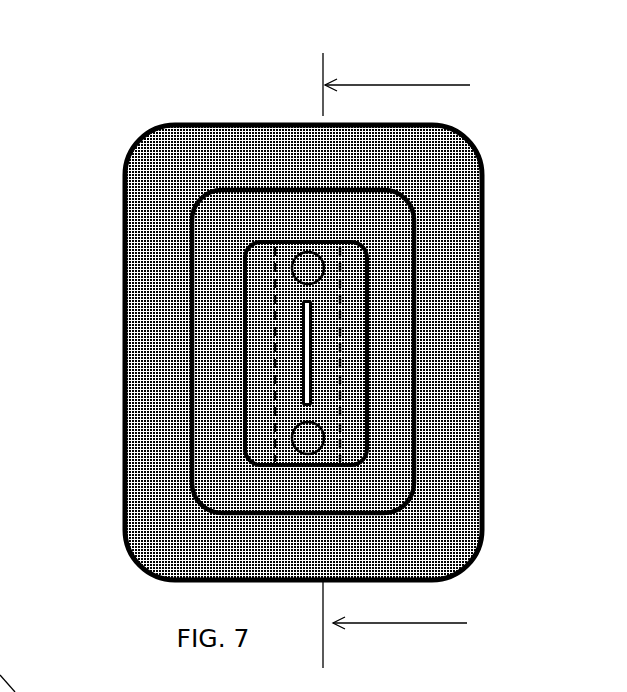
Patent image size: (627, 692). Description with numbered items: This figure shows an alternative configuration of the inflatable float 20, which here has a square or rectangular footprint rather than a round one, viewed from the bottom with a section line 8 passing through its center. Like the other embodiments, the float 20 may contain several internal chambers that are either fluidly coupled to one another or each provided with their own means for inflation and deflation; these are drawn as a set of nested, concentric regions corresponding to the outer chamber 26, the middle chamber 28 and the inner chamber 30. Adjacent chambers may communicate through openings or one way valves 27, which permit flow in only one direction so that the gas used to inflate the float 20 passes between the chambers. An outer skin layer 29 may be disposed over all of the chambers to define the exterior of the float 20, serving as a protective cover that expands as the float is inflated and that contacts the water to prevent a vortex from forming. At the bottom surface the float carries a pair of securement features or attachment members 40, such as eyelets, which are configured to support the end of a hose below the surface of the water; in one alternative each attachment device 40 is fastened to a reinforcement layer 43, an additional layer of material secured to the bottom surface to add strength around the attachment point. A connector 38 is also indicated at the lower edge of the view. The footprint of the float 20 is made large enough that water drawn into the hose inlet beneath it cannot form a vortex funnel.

The section line 8- 8 is at (396, 363).
The float 20 is at (313, 363).
The outer chamber 26 is at (420, 530).
The one way valves 27 is at (25, 379).
The middle chamber 28 is at (390, 380).
The outer skin layer 29 is at (17, 577).
The inner chamber 30 is at (265, 330).
The connector 38 is at (77, 691).
The float attachment device 40 is at (316, 280).
The reinforcement layer 43 is at (372, 348).